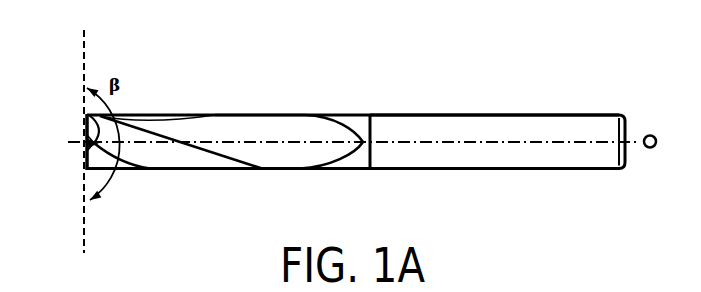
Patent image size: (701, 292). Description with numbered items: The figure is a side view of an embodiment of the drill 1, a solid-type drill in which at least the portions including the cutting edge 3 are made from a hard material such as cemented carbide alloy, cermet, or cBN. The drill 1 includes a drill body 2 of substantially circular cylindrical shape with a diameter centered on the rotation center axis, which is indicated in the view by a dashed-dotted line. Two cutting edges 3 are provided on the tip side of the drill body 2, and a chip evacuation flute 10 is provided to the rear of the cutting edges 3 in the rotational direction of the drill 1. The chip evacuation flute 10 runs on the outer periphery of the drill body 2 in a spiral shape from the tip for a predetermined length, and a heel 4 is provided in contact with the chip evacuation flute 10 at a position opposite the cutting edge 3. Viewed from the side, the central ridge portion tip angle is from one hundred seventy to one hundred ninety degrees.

The drill 1 is at (257, 84).
The drill body 2 is at (448, 128).
The cutting edge 3 is at (85, 153).
The heel 4 is at (85, 128).
The chip evacuation flute 10 is at (186, 162).